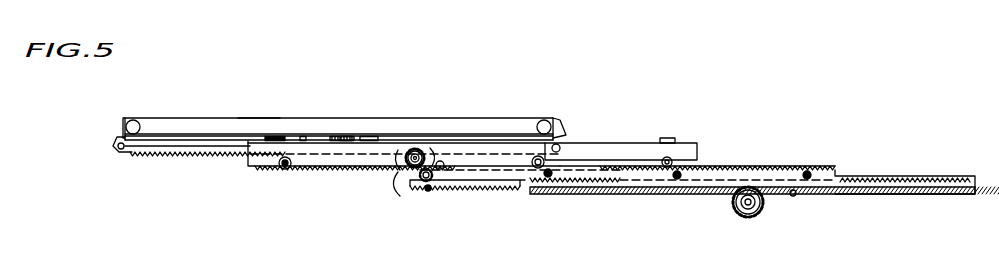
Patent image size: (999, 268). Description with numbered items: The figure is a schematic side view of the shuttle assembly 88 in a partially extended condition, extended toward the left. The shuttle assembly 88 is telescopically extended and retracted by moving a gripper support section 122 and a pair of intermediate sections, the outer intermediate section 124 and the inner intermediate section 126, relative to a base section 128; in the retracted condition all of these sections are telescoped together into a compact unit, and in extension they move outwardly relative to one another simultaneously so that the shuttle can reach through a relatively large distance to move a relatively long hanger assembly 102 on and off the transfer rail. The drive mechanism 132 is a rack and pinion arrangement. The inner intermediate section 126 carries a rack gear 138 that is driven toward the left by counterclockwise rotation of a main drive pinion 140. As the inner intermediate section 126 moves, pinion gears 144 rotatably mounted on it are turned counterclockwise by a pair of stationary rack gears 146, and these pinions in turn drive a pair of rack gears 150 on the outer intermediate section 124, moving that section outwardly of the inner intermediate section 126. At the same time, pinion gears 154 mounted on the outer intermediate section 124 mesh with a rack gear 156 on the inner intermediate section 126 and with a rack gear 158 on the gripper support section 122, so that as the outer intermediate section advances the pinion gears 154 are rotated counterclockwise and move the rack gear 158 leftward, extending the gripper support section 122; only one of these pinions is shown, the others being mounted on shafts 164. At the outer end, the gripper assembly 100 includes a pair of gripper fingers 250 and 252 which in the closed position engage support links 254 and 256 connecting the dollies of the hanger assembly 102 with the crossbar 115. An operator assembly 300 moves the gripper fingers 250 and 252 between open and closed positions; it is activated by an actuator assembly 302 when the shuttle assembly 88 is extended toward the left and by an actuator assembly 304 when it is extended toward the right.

The gripper assembly 100 is at (567, 120).
The hanger assembly 102 is at (352, 117).
The crossbar 115 is at (262, 117).
The gripper support section 122 is at (176, 155).
The outer intermediate section 124 is at (252, 155).
The inner intermediate section 126 is at (487, 192).
The base section 128 is at (684, 197).
The drive mechanism 132 is at (736, 215).
The rack gear 138 is at (536, 170).
The main drive pinion 140 is at (760, 208).
The pinion gears 144 is at (428, 192).
The stationary rack gears 146 is at (718, 168).
The rack gears 150 is at (332, 171).
The pinion gears 154 is at (415, 148).
The rack gear 156 is at (402, 186).
The rack gear 158 is at (228, 157).
The shafts 164 is at (285, 170).
The gripper finger 250 is at (128, 118).
The gripper finger 252 is at (567, 132).
The support link 254 is at (141, 125).
The support link 256 is at (544, 119).
The operator assembly 300 is at (345, 142).
The actuator assembly 302 is at (288, 137).
The actuator assembly 304 is at (666, 138).
The shuttle assembly 88 is at (345, 221).